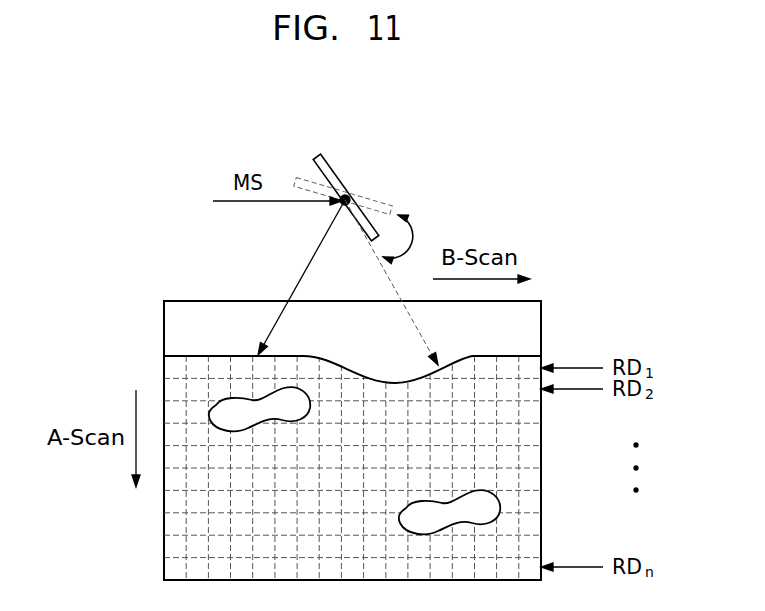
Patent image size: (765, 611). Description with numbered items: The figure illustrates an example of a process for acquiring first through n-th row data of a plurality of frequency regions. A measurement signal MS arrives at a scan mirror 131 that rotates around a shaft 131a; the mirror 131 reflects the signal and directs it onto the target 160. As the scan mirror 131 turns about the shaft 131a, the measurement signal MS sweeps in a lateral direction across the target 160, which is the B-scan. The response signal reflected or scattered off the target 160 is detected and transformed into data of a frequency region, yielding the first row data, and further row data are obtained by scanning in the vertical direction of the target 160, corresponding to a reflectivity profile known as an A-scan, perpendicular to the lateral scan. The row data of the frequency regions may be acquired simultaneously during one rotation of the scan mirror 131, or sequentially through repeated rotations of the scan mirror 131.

The scan mirror 131 is at (328, 163).
The shaft 131a is at (349, 197).
The target 160 is at (508, 356).